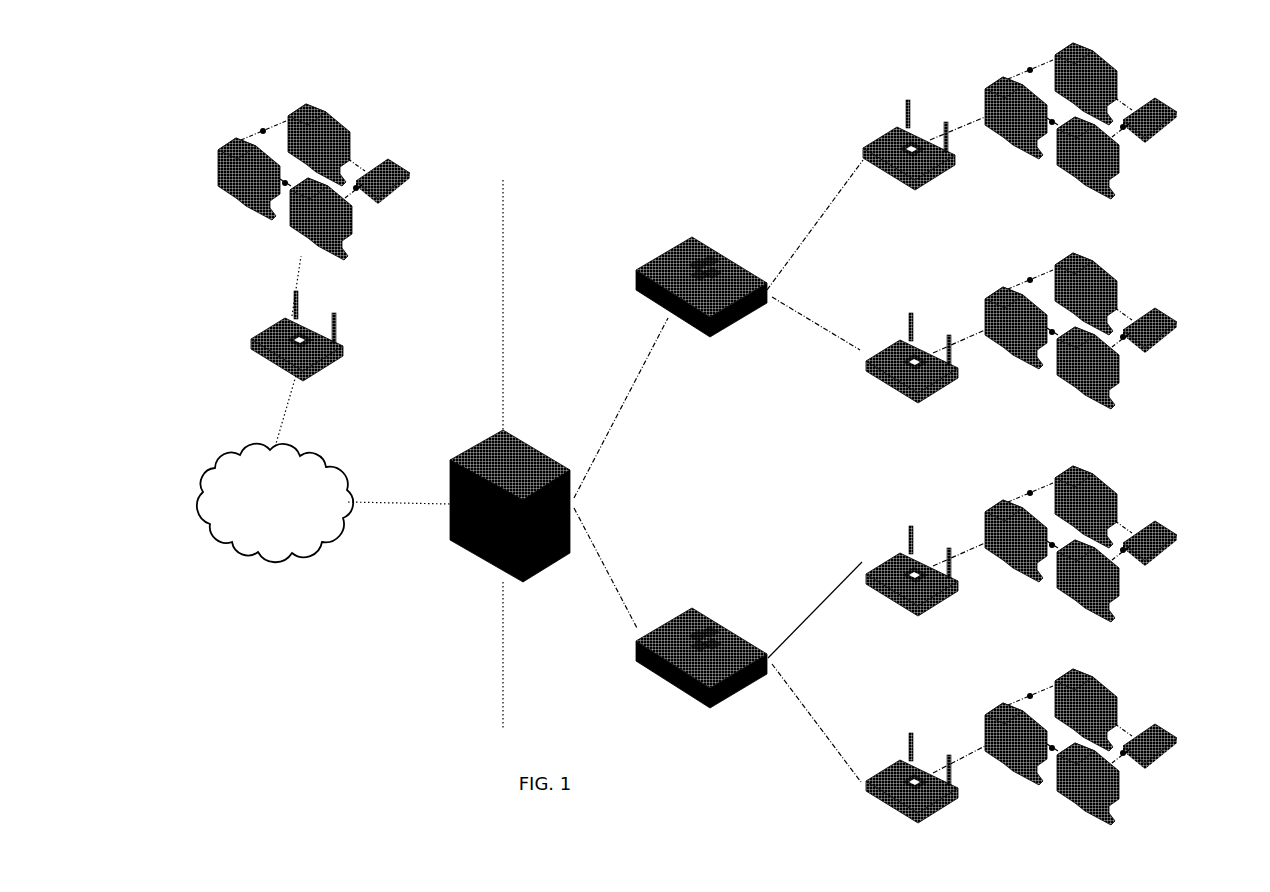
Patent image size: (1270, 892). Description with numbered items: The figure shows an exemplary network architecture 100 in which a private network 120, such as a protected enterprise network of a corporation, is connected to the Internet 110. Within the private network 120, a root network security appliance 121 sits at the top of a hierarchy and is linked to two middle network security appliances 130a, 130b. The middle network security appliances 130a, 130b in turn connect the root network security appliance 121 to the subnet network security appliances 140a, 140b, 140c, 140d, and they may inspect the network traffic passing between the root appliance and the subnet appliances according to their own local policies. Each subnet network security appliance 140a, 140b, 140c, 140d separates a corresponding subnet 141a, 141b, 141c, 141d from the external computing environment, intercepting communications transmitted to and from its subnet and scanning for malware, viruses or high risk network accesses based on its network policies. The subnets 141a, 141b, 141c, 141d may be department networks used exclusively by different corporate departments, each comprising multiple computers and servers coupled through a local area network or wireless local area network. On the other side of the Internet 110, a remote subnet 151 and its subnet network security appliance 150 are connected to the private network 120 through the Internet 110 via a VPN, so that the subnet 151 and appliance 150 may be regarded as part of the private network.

The network architecture 100 is at (496, 50).
The Internet 110 is at (275, 503).
The private network 120 is at (558, 158).
The root network security appliance 121 is at (524, 423).
The middle network security appliance 130a is at (675, 203).
The middle network security appliance 130b is at (675, 588).
The subnet network security appliance 140a is at (879, 73).
The subnet network security appliance 140b is at (876, 298).
The subnet network security appliance 140c is at (879, 501).
The subnet network security appliance 140d is at (879, 715).
The subnet 141a is at (1142, 53).
The subnet 141b is at (1139, 265).
The subnet 141c is at (1150, 498).
The subnet 141d is at (1149, 703).
The subnet network security appliance 150 is at (364, 346).
The subnet 151 is at (391, 130).